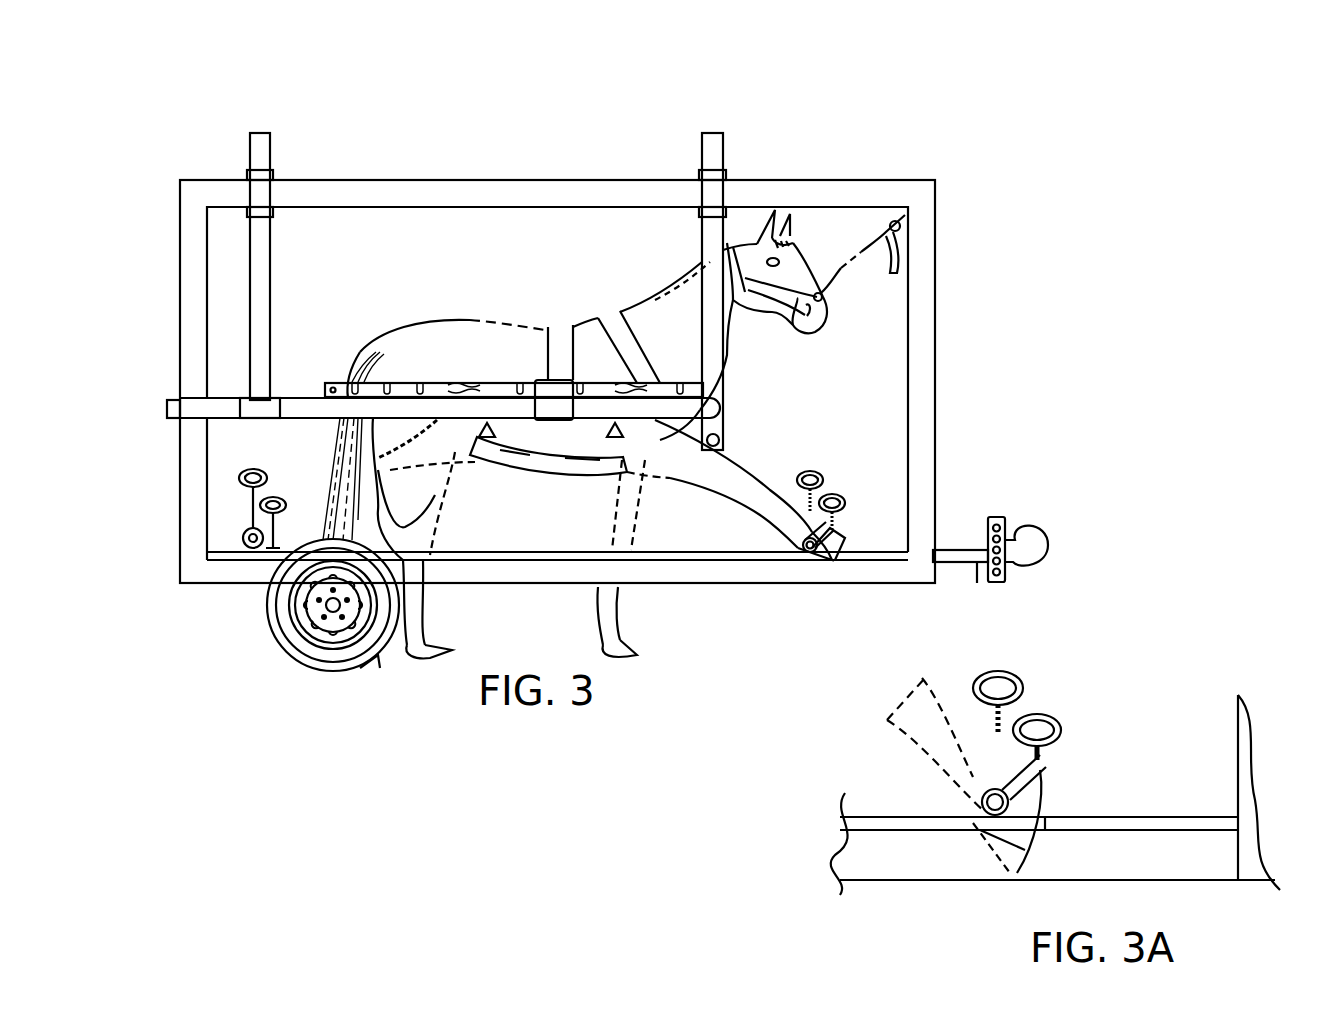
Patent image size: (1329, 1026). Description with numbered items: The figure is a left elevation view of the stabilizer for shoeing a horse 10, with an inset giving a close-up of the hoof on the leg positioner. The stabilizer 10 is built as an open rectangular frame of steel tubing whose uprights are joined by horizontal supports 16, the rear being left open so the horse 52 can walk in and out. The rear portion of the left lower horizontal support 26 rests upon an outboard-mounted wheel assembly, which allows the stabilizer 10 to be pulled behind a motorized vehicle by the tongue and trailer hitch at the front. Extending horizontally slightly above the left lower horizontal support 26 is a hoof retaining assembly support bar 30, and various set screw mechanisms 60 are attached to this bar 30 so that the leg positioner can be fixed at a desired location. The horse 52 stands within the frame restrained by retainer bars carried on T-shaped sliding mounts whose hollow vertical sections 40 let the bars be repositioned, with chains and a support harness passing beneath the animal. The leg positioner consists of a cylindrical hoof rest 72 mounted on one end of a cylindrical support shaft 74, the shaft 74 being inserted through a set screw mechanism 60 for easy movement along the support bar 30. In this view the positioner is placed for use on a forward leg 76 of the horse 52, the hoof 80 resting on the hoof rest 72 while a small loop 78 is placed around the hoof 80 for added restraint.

In FIG. 3, the stabilizer for shoeing a horse 10 is at (418, 120).
In FIG. 3, the horizontal supports 16 is at (602, 197).
In FIG. 3, the left lower horizontal support 26 is at (512, 570).
In FIG. 3, the hoof retaining assembly support bar 30 is at (876, 548).
In FIG. 3A, the hoof retaining assembly support bar 30 is at (1120, 817).
In FIG. 3, the vertical section 40 is at (725, 178).
In FIG. 3, the horse 52 is at (452, 347).
In FIG. 3, the set screw mechanism 60 is at (802, 558).
In FIG. 3A, the set screw mechanism 60 is at (995, 802).
In FIG. 3, the cylindrical hoof rest 72 is at (780, 540).
In FIG. 3A, the cylindrical hoof rest 72 is at (985, 795).
In FIG. 3, the cylindrical support shaft 74 is at (807, 558).
In FIG. 3A, the cylindrical support shaft 74 is at (987, 810).
In FIG. 3, the forward leg 76 is at (713, 490).
In FIG. 3, the small loop 78 is at (832, 536).
In FIG. 3A, the small loop 78 is at (1068, 772).
In FIG. 3, the hoof 80 is at (833, 553).
In FIG. 3A, the hoof 80 is at (993, 858).